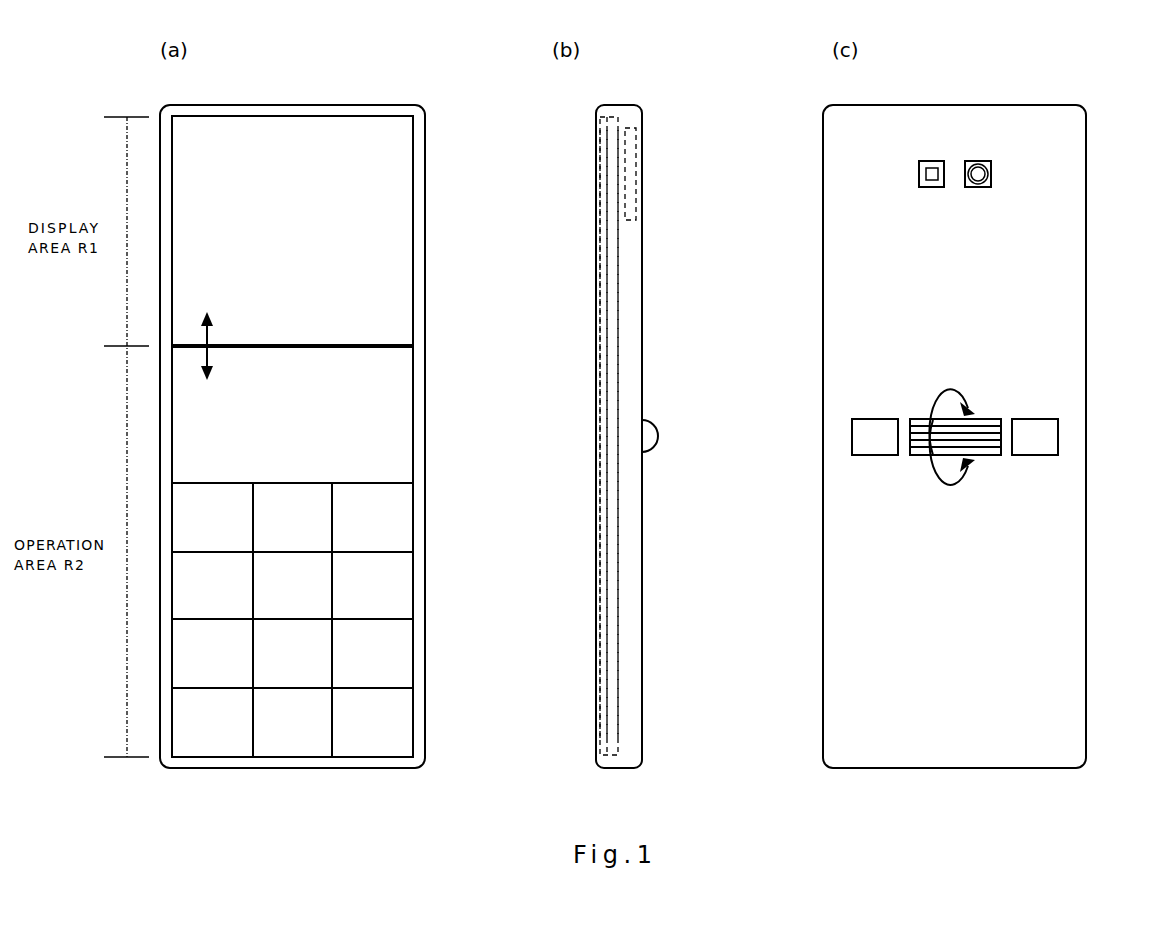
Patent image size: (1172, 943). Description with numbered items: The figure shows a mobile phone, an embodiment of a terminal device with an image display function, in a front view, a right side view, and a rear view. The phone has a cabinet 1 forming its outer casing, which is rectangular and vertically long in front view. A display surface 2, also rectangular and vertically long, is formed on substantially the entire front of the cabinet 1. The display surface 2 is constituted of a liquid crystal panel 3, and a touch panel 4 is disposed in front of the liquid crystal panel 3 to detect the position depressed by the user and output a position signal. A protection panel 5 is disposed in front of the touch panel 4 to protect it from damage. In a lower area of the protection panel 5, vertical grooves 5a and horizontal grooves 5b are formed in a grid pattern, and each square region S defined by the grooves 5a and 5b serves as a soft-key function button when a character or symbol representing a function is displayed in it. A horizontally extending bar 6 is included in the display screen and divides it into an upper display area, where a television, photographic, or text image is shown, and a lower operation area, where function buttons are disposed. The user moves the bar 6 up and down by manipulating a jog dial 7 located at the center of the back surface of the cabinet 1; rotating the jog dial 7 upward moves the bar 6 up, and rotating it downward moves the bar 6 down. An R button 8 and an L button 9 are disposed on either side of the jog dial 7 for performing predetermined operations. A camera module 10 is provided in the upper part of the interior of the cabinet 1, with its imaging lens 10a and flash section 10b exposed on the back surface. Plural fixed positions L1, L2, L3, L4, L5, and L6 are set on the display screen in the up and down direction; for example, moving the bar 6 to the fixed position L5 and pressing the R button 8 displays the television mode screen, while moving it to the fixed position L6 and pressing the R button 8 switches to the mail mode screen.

The cabinet 1 is at (423, 160).
The display surface 2 is at (390, 232).
The liquid crystal panel 3 is at (612, 280).
The touch panel 4 is at (603, 348).
The protection panel 5 is at (596, 365).
The vertical grooves 5a is at (332, 515).
The horizontal grooves 5b is at (380, 484).
The bar 6 is at (367, 342).
The jog dial 7 is at (985, 420).
The R button 8 is at (1032, 438).
The L button 9 is at (652, 426).
The camera module 10 is at (633, 180).
The imaging lens 10a is at (978, 160).
The flash section 10b is at (933, 160).
The square region S is at (355, 505).
The fixed position L1 is at (425, 688).
The fixed position L2 is at (425, 619).
The fixed position L3 is at (425, 552).
The fixed position L4 is at (425, 483).
The fixed position L5 is at (425, 414).
The fixed position L6 is at (425, 346).